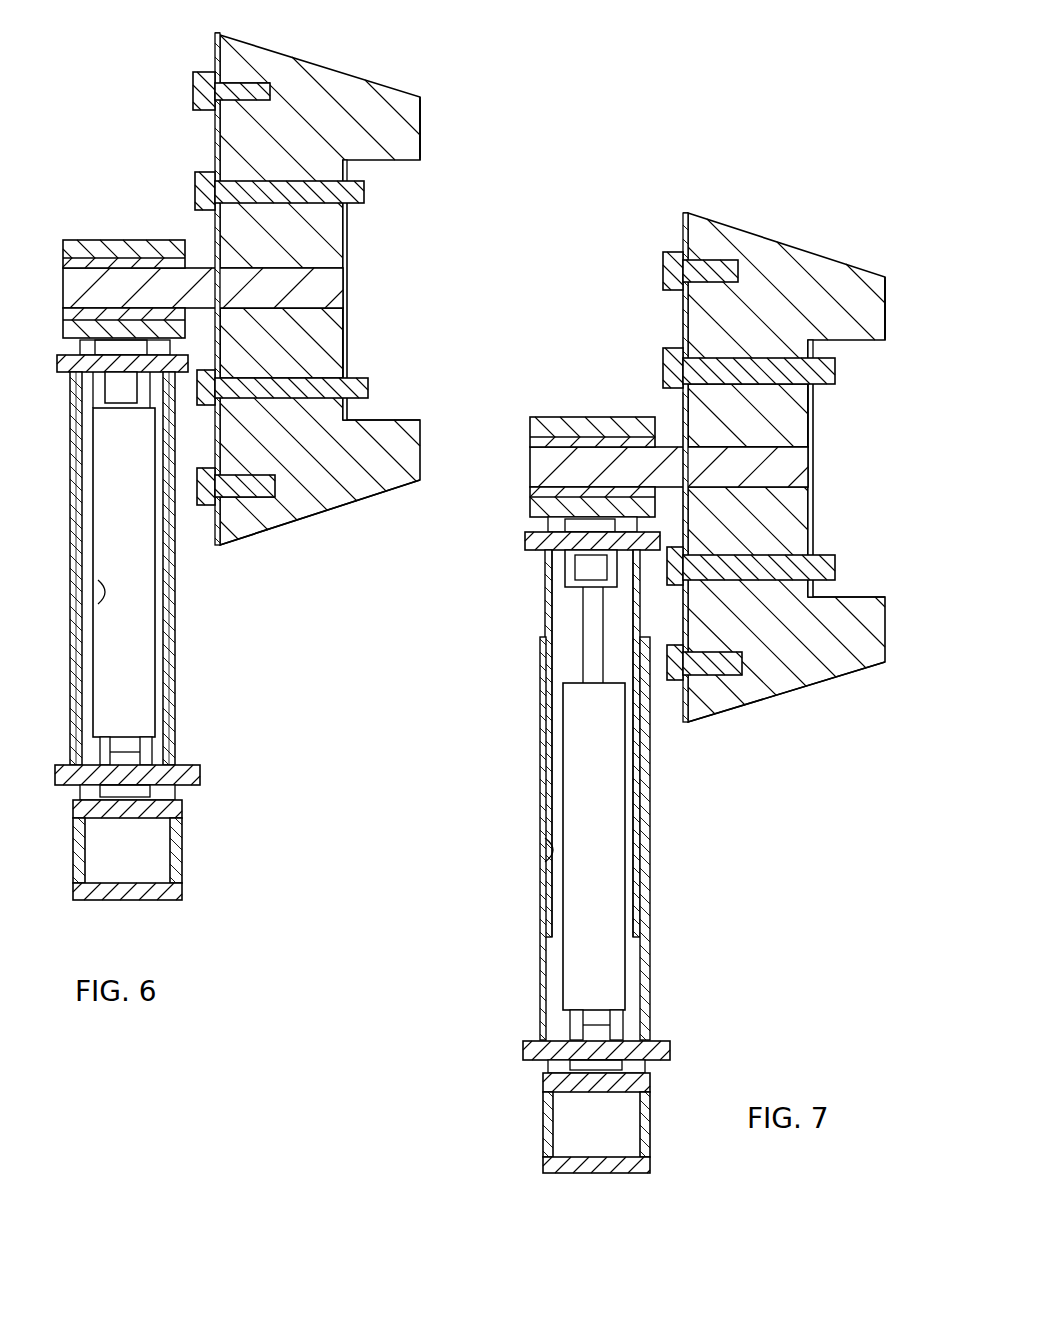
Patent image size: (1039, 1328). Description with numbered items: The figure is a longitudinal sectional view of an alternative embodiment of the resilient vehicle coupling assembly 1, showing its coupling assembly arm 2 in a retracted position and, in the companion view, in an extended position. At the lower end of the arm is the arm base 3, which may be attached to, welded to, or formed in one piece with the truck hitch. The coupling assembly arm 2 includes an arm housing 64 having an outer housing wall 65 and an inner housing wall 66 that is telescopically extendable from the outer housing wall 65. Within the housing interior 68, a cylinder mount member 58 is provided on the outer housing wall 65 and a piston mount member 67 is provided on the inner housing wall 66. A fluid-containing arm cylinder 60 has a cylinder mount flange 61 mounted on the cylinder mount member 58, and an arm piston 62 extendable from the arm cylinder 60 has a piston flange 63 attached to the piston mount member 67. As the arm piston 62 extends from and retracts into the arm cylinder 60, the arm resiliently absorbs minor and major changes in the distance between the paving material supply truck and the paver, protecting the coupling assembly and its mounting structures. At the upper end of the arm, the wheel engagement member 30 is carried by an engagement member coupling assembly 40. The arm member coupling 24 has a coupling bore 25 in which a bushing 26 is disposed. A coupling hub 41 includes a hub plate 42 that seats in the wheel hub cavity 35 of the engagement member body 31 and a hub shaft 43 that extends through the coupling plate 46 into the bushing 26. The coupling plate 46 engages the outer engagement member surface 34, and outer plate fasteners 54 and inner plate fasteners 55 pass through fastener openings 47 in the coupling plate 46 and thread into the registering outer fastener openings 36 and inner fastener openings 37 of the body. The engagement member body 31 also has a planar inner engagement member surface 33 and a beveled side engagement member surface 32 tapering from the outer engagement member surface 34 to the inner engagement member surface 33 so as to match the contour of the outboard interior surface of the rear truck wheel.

In FIG. 6, the vehicle coupling assembly 1 is at (46, 104).
In FIG. 7, the vehicle coupling assembly 1 is at (571, 163).
In FIG. 6, the coupling assembly arm 2 is at (55, 488).
In FIG. 7, the coupling assembly arm 2 is at (520, 690).
In FIG. 6, the arm base 3 is at (182, 850).
In FIG. 7, the arm base 3 is at (543, 1118).
In FIG. 6, the arm member coupling 24 is at (120, 247).
In FIG. 7, the arm member coupling 24 is at (592, 418).
In FIG. 6, the coupling bore 25 is at (63, 288).
In FIG. 7, the coupling bore 25 is at (530, 462).
In FIG. 6, the bushing 26 is at (150, 258).
In FIG. 7, the bushing 26 is at (565, 437).
In FIG. 6, the wheel engagement member 30 is at (358, 513).
In FIG. 7, the wheel engagement member 30 is at (775, 724).
In FIG. 6, the engagement member body 31 is at (360, 92).
In FIG. 7, the engagement member body 31 is at (757, 245).
In FIG. 6, the side engagement member surface 32 is at (322, 515).
In FIG. 7, the side engagement member surface 32 is at (818, 700).
In FIG. 6, the inner engagement member surface 33 is at (422, 128).
In FIG. 7, the inner engagement member surface 33 is at (886, 285).
In FIG. 6, the outer engagement member surface 34 is at (213, 45).
In FIG. 7, the outer engagement member surface 34 is at (683, 232).
In FIG. 6, the wheel hub cavity 35 is at (392, 420).
In FIG. 7, the wheel hub cavity 35 is at (855, 597).
In FIG. 6, the outer fastener openings 36 is at (262, 88).
In FIG. 6, the inner fastener openings 37 is at (362, 195).
In FIG. 7, the inner fastener openings 37 is at (815, 398).
In FIG. 6, the engagement member coupling assembly 40 is at (374, 267).
In FIG. 7, the engagement member coupling assembly 40 is at (840, 470).
In FIG. 6, the coupling hub 41 is at (352, 250).
In FIG. 7, the coupling hub 41 is at (820, 505).
In FIG. 6, the hub plate 42 is at (346, 330).
In FIG. 7, the hub plate 42 is at (814, 440).
In FIG. 6, the hub shaft 43 is at (268, 300).
In FIG. 7, the hub shaft 43 is at (672, 447).
In FIG. 6, the coupling plate 46 is at (215, 132).
In FIG. 7, the coupling plate 46 is at (685, 215).
In FIG. 7, the fastener openings 47 is at (683, 322).
In FIG. 6, the outer plate fasteners 54 is at (193, 86).
In FIG. 7, the outer plate fasteners 54 is at (663, 270).
In FIG. 6, the inner plate fasteners 55 is at (198, 185).
In FIG. 7, the inner plate fasteners 55 is at (668, 365).
In FIG. 6, the cylinder mount member 58 is at (200, 776).
In FIG. 7, the cylinder mount member 58 is at (523, 1050).
In FIG. 6, the arm cylinder 60 is at (130, 645).
In FIG. 7, the arm cylinder 60 is at (586, 786).
In FIG. 6, the cylinder mount flange 61 is at (152, 752).
In FIG. 7, the cylinder mount flange 61 is at (572, 1025).
In FIG. 7, the arm piston 62 is at (592, 607).
In FIG. 6, the piston flange 63 is at (100, 390).
In FIG. 7, the piston flange 63 is at (548, 528).
In FIG. 6, the arm housing 64 is at (172, 612).
In FIG. 7, the arm housing 64 is at (538, 730).
In FIG. 6, the outer housing wall 65 is at (177, 690).
In FIG. 7, the outer housing wall 65 is at (540, 940).
In FIG. 6, the inner housing wall 66 is at (172, 703).
In FIG. 7, the inner housing wall 66 is at (546, 578).
In FIG. 6, the piston mount member 67 is at (58, 360).
In FIG. 7, the piston mount member 67 is at (526, 540).
In FIG. 6, the housing interior 68 is at (98, 592).
In FIG. 7, the housing interior 68 is at (545, 850).